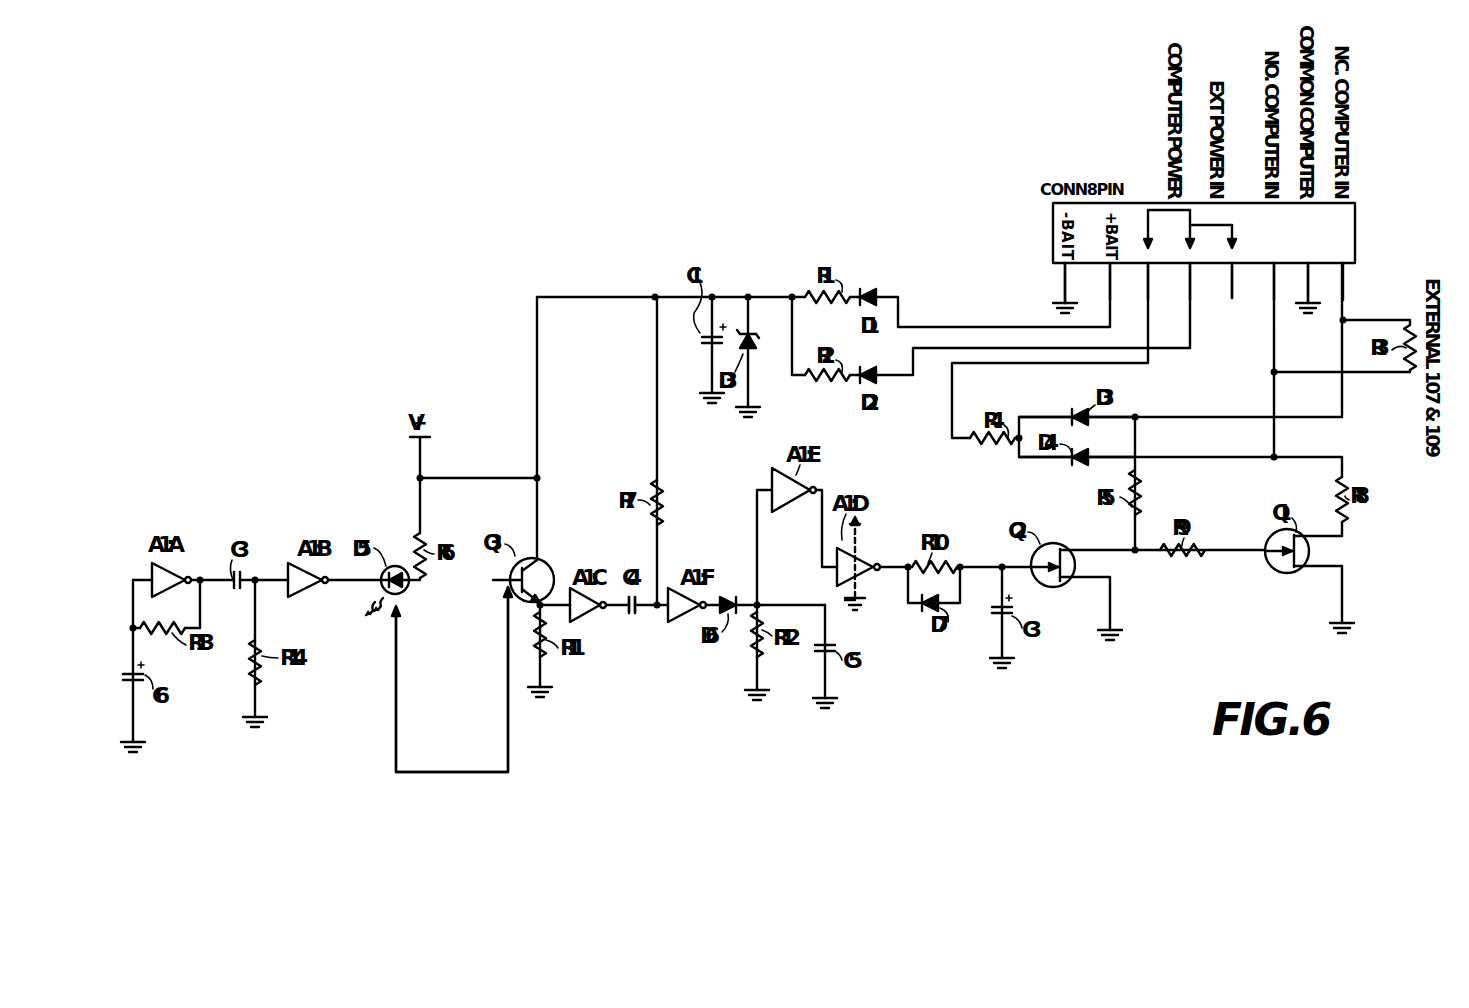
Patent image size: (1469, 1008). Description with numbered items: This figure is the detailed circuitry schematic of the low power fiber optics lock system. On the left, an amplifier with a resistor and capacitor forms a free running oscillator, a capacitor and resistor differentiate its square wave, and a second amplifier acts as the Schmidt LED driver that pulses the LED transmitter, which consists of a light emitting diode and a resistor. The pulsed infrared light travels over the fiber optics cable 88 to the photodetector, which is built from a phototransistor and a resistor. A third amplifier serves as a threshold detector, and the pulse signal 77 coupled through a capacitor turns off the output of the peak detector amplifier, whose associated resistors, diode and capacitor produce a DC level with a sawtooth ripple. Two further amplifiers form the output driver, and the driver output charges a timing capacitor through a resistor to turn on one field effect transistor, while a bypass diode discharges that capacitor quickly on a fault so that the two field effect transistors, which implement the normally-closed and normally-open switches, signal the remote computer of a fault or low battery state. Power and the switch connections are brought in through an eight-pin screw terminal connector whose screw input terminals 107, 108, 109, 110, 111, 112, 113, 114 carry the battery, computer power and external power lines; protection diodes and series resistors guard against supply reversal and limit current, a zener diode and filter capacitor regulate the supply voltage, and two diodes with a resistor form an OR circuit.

The pulse signal 77 is at (640, 616).
The fiber optics cable 88 is at (448, 772).
The screw input terminal 107 is at (1353, 281).
The screw input terminal 108 is at (1318, 283).
The screw input terminal 109 is at (1284, 281).
The screw input terminal 110 is at (1242, 280).
The screw input terminal 111 is at (1200, 281).
The screw input terminal 112 is at (1158, 281).
The screw input terminal 113 is at (1120, 281).
The screw input terminal 114 is at (1075, 283).